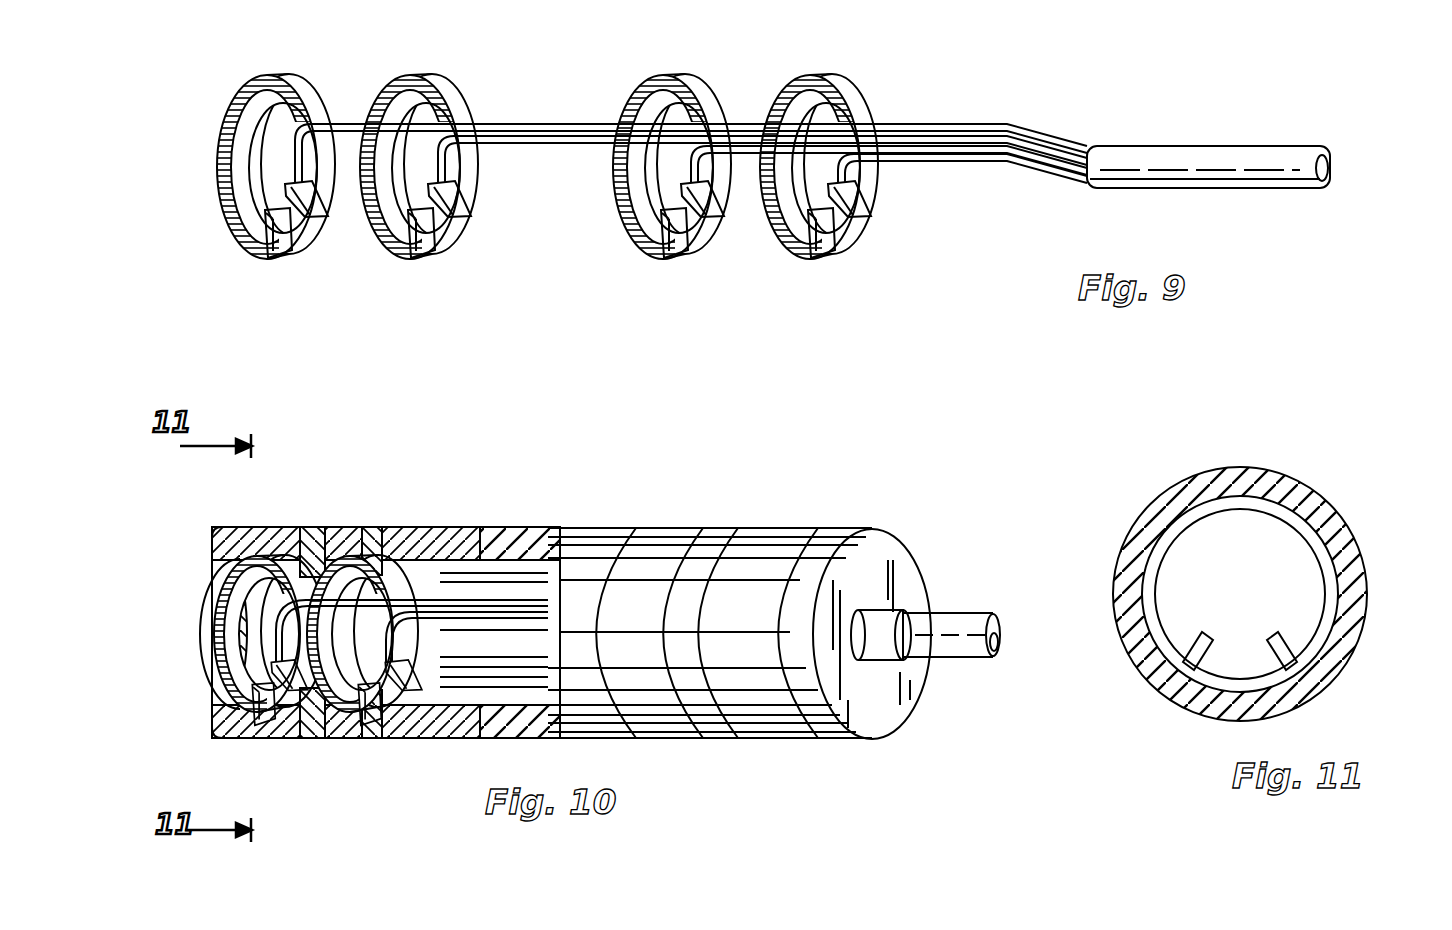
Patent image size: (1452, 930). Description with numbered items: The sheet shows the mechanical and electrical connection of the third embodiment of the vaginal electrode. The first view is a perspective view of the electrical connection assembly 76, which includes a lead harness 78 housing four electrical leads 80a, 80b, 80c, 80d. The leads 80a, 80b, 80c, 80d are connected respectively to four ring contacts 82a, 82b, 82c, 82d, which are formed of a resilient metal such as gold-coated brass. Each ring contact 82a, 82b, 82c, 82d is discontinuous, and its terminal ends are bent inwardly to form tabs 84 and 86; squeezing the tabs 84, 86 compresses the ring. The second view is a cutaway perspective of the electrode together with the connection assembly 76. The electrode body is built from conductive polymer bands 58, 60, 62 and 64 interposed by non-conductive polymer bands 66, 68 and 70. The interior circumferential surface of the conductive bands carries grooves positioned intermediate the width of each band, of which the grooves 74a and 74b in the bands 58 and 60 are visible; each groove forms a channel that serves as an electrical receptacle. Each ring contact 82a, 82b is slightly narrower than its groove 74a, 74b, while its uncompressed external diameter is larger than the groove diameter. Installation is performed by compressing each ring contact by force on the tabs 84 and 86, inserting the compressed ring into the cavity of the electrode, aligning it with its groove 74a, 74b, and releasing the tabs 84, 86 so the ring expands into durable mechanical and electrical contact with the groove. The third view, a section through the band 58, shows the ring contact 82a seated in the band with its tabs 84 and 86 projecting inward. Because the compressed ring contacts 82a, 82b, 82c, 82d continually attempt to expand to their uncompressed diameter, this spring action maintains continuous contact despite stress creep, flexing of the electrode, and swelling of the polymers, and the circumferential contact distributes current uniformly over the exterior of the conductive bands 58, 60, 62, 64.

In FIG. 10, the conductive polymer band 58 is at (298, 528).
In FIG. 11, the conductive polymer band 58 is at (1302, 483).
In FIG. 10, the conductive polymer band 60 is at (423, 532).
In FIG. 10, the conductive polymer band 62 is at (666, 532).
In FIG. 10, the conductive polymer band 64 is at (790, 532).
In FIG. 10, the non-conductive polymer band 66 is at (344, 545).
In FIG. 10, the non-conductive polymer band 68 is at (536, 530).
In FIG. 10, the non-conductive polymer band 70 is at (727, 532).
In FIG. 10, the groove 74a is at (280, 735).
In FIG. 10, the groove 74b is at (396, 735).
In FIG. 9, the electrical connection assembly 76 is at (773, 219).
In FIG. 9, the lead harness 78 is at (1195, 157).
In FIG. 10, the lead harness 78 is at (950, 628).
In FIG. 9, the electrical lead 80a is at (347, 134).
In FIG. 9, the electrical lead 80b is at (560, 144).
In FIG. 9, the electrical lead 80c is at (745, 154).
In FIG. 9, the electrical lead 80d is at (928, 162).
In FIG. 9, the ring contact 82a is at (265, 78).
In FIG. 10, the ring contact 82a is at (266, 532).
In FIG. 11, the ring contact 82a is at (1330, 586).
In FIG. 9, the ring contact 82b is at (415, 80).
In FIG. 10, the ring contact 82b is at (348, 557).
In FIG. 9, the ring contact 82c is at (666, 80).
In FIG. 9, the ring contact 82d is at (850, 58).
In FIG. 9, the tab 84 is at (272, 242).
In FIG. 10, the tab 84 is at (242, 722).
In FIG. 11, the tab 84 is at (1273, 632).
In FIG. 9, the tab 86 is at (306, 216).
In FIG. 10, the tab 86 is at (294, 694).
In FIG. 11, the tab 86 is at (1207, 632).